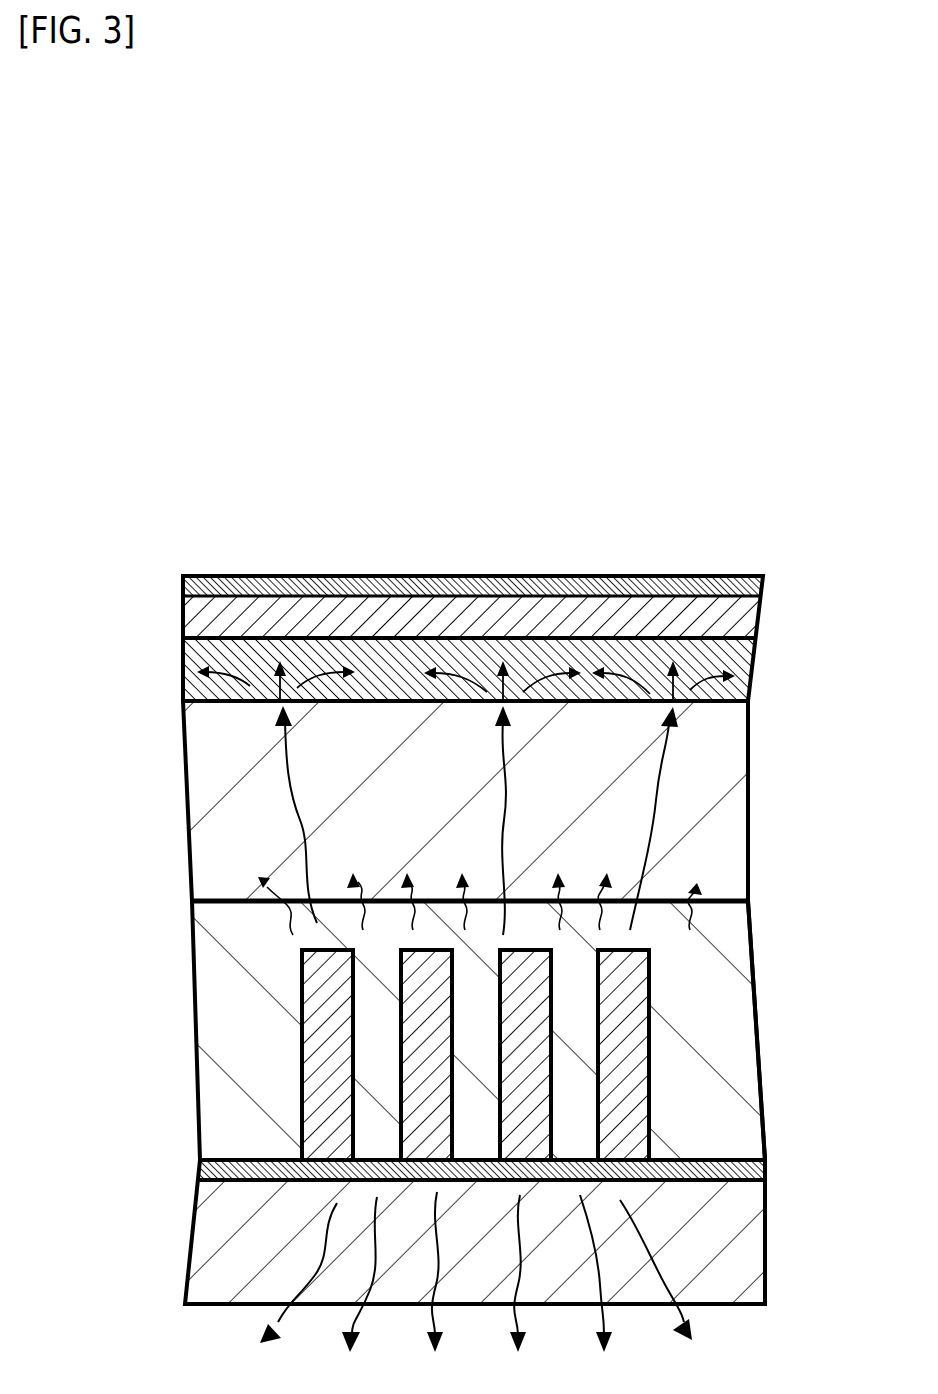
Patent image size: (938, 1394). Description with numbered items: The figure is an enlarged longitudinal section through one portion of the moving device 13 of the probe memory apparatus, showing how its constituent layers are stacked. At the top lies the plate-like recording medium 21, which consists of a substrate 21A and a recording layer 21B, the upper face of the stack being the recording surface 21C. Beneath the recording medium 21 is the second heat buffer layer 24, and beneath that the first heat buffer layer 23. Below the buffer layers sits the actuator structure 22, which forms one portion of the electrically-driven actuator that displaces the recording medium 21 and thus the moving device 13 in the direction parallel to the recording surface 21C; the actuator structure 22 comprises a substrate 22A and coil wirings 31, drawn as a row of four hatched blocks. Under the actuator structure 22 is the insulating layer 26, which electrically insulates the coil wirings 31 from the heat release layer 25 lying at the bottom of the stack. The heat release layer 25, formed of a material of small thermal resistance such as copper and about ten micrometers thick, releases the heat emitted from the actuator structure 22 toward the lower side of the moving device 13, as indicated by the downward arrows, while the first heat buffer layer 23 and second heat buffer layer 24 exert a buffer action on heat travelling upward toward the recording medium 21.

The moving device 13 is at (705, 543).
The recording medium 21 is at (522, 571).
The substrate 21A is at (760, 620).
The recording layer 21B is at (763, 583).
The recording surface 21C is at (285, 575).
The second heat buffer layer 24 is at (752, 667).
The first heat buffer layer 23 is at (745, 755).
The actuator structure 22 is at (760, 1090).
The substrate 22A is at (753, 1018).
The coil wirings 31 is at (310, 1043).
The insulating layer 26 is at (765, 1170).
The heat release layer 25 is at (765, 1227).